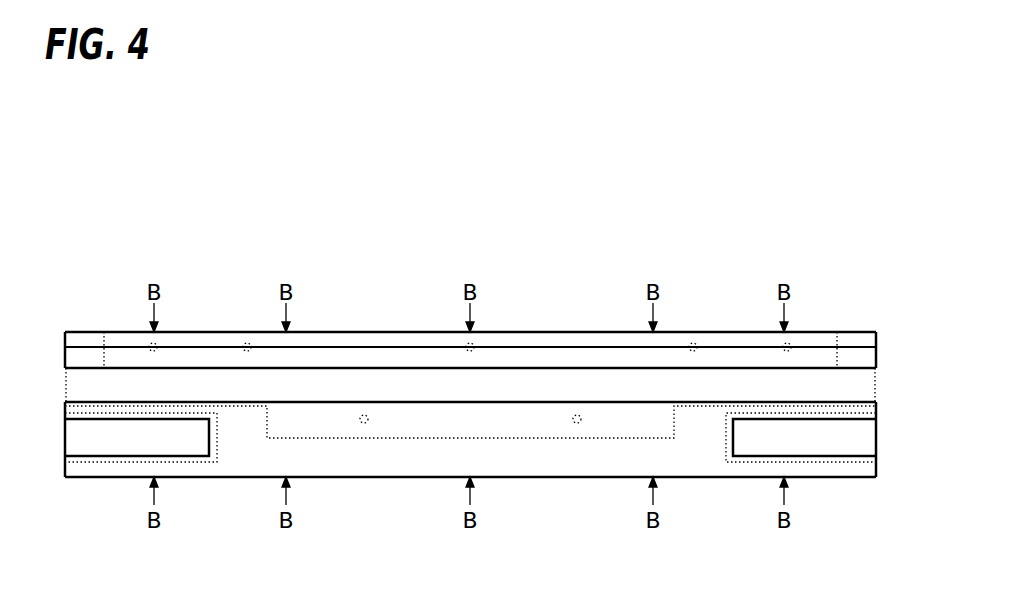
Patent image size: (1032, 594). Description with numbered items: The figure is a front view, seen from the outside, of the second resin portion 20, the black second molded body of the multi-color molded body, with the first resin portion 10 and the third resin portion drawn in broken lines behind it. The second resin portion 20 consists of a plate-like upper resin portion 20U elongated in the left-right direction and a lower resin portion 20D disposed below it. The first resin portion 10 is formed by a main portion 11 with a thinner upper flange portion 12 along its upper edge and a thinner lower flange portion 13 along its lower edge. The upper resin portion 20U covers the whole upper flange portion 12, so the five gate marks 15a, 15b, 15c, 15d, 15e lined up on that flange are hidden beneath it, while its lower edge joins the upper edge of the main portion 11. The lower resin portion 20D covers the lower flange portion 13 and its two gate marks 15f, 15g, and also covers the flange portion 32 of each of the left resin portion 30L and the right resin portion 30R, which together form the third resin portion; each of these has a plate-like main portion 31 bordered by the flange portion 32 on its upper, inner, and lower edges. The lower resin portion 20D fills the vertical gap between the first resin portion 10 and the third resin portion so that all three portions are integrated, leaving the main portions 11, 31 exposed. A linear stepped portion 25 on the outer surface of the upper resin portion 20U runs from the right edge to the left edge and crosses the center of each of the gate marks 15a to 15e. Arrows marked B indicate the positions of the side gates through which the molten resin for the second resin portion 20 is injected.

The first resin portion 10 is at (442, 260).
The main portion 11 is at (372, 385).
The upper flange portion 12 is at (341, 341).
The lower flange portion 13 is at (417, 423).
The gate mark 15a is at (150, 344).
The gate mark 15b is at (245, 343).
The gate mark 15c is at (470, 352).
The gate mark 15d is at (693, 343).
The gate mark 15e is at (784, 344).
The gate mark 15f is at (364, 424).
The gate mark 15g is at (577, 424).
The second resin portion 20 is at (898, 237).
The upper resin portion 20U is at (820, 340).
The lower resin portion 20D is at (872, 469).
The stepped portion 25 is at (604, 342).
The left resin portion 30L is at (260, 512).
The right resin portion 30R is at (763, 512).
The main portion 31 is at (187, 437).
The flange portion 32 is at (215, 452).